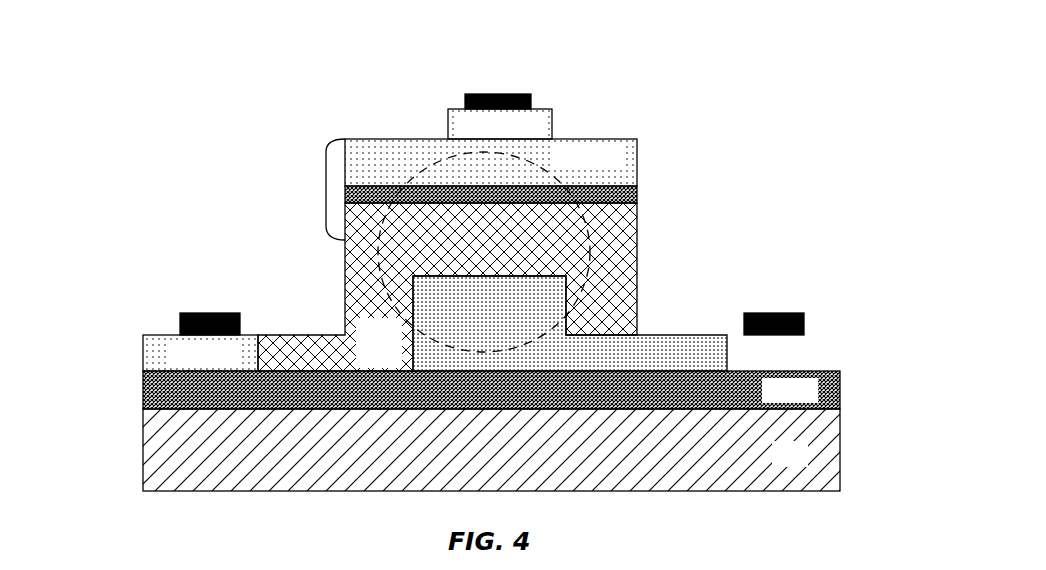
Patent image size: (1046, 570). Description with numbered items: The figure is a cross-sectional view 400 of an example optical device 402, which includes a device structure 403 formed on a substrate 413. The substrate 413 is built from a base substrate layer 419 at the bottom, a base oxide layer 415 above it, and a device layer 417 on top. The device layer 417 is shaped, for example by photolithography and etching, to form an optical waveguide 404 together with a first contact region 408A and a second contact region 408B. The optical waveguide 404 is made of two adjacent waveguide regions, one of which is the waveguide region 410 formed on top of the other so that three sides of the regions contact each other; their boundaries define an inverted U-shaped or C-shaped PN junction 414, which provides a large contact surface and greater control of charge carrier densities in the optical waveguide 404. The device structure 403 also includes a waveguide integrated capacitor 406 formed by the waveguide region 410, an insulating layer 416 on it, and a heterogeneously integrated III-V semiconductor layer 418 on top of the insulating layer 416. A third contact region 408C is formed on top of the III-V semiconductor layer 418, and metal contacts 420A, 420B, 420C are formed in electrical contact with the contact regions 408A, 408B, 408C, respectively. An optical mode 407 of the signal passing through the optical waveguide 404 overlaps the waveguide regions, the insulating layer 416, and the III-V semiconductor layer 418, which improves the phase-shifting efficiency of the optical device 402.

The cross-sectional view 400 is at (648, 44).
The optical device 402 is at (637, 139).
The device structure 403 is at (83, 80).
The optical waveguide 404 is at (672, 203).
The waveguide integrated capacitor 406 is at (325, 187).
The optical mode 407 is at (443, 135).
The first contact region 408A is at (152, 334).
The second contact region 408B is at (818, 335).
The third contact region 408C is at (449, 108).
The waveguide region 410 is at (447, 287).
The substrate 413 is at (862, 280).
The PN junction 414 is at (500, 254).
The base oxide layer 415 is at (144, 401).
The insulating layer 416 is at (640, 196).
The device layer 417 is at (143, 357).
The III-V semiconductor layer 418 is at (564, 137).
The base substrate layer 419 is at (163, 457).
The metal contact 420A is at (241, 326).
The metal contact 420B is at (767, 312).
The metal contact 420C is at (500, 93).